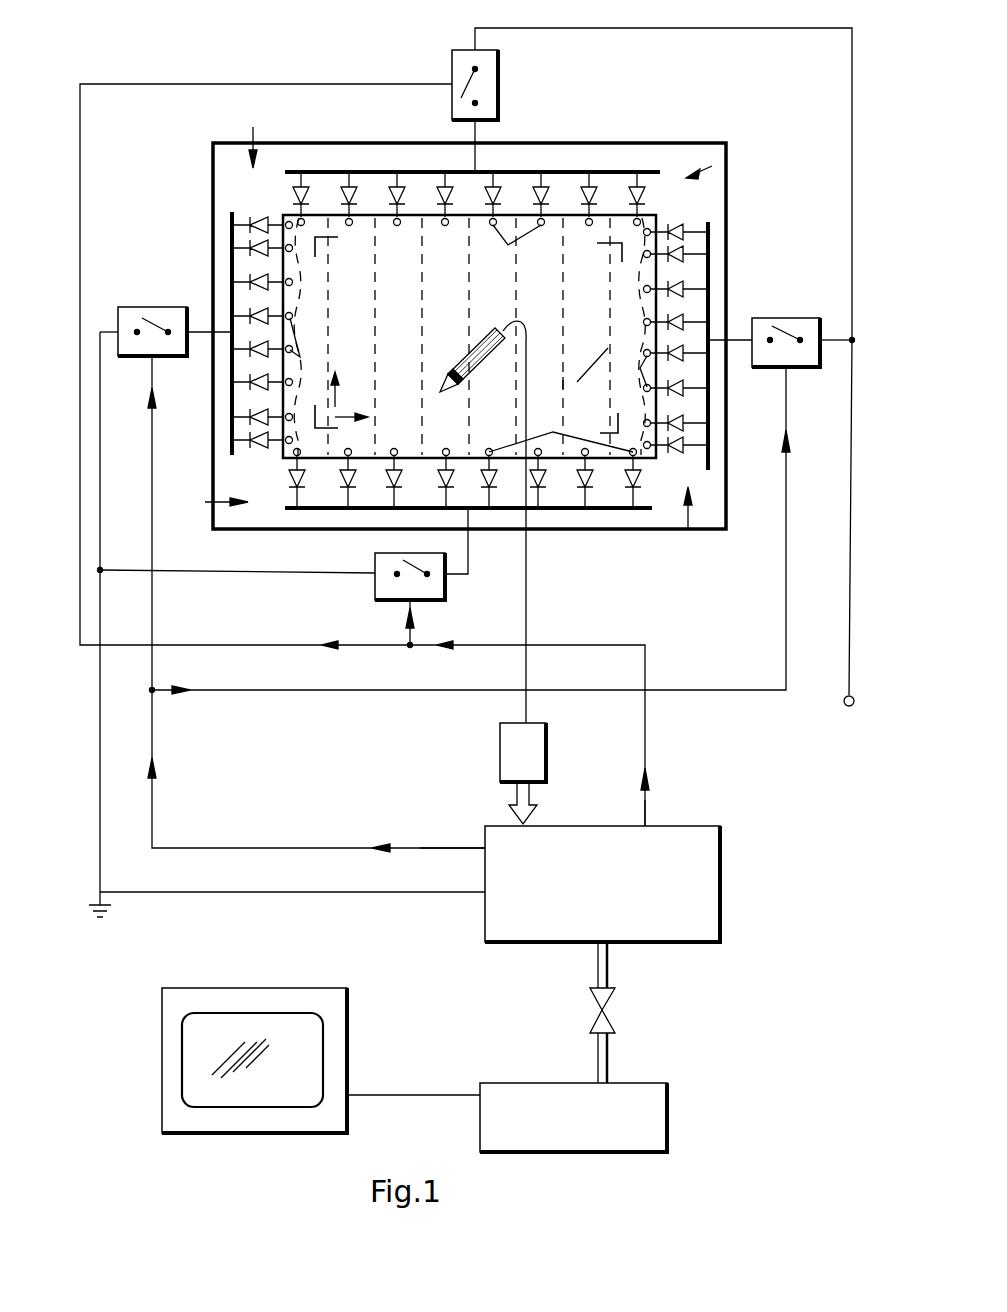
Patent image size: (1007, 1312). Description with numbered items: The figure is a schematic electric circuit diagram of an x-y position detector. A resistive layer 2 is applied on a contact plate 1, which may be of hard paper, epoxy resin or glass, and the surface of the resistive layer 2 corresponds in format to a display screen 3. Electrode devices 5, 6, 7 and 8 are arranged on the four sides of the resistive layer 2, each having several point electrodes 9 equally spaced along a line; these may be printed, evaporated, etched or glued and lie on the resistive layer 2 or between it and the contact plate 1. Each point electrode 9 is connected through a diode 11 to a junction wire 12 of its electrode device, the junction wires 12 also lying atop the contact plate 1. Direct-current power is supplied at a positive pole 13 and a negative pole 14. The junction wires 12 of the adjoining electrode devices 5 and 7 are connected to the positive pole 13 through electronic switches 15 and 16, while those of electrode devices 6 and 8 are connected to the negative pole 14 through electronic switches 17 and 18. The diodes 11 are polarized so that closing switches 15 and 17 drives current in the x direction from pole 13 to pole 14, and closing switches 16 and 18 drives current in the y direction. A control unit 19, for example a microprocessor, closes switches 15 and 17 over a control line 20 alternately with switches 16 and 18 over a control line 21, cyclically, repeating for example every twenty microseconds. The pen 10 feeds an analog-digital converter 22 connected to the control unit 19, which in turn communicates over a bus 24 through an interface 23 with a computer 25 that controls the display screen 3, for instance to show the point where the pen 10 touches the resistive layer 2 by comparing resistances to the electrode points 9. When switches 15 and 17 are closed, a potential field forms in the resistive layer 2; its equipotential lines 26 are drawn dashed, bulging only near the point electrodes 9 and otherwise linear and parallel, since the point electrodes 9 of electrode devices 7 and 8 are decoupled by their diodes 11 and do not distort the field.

The contact plate 1 is at (720, 233).
The resistive layer 2 is at (449, 301).
The display screen 3 is at (205, 1060).
The electrode device 5 is at (694, 509).
The electrode device 6 is at (253, 137).
The electrode device 7 is at (705, 170).
The electrode device 8 is at (216, 502).
The point electrodes 9 is at (508, 245).
The pen 10 is at (497, 330).
The diode 11 is at (393, 188).
The junction wire 12 is at (420, 170).
The positive pole 13 is at (843, 708).
The negative pole 14 is at (105, 895).
The electronic switch 15 is at (800, 325).
The electronic switch 16 is at (492, 100).
The electronic switch 17 is at (130, 312).
The electronic switch 18 is at (430, 592).
The control unit 19 is at (567, 876).
The control line 20 is at (485, 845).
The control line 21 is at (648, 826).
The analog-digital converter 22 is at (500, 756).
The interface 23 is at (605, 1010).
The bus 24 is at (600, 1065).
The computer 25 is at (640, 1127).
The equipotential lines 26 is at (563, 383).